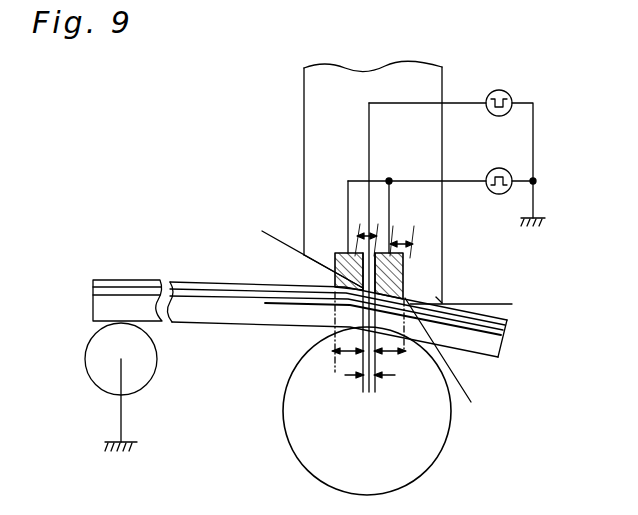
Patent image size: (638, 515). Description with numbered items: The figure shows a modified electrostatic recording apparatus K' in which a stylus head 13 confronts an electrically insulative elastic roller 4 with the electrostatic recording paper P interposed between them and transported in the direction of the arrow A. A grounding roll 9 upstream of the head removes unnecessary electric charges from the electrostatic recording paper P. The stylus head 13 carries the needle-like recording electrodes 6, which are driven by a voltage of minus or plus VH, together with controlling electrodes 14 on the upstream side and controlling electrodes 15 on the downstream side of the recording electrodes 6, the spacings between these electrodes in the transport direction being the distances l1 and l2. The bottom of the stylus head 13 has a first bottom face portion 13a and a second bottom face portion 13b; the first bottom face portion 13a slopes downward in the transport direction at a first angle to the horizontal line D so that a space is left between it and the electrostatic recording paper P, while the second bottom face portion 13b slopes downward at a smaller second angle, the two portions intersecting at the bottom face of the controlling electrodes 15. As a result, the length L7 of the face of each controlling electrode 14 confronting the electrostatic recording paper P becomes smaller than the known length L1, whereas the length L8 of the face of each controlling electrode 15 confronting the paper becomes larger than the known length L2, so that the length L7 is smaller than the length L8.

The stylus head 13 is at (302, 128).
The first bottom face portion 13a is at (315, 262).
The second bottom face portion 13b is at (466, 367).
The controlling electrodes 14 is at (303, 237).
The controlling electrodes 15 is at (400, 271).
The recording electrodes 6 is at (369, 141).
The grounding roll 9 is at (87, 362).
The elastic roller 4 is at (438, 455).
The horizontal line D is at (517, 303).
The transport direction arrow A is at (477, 337).
The electrostatic recording paper P is at (487, 359).
The electrostatic recording apparatus K' is at (561, 36).
The length of upstream controlling electrodes L1 is at (348, 349).
The length of downstream controlling electrodes L2 is at (386, 349).
The face length of upstream controlling electrodes L7 is at (361, 236).
The face length of downstream controlling electrodes L8 is at (398, 244).
The distance between upstream controlling electrodes and recording electrodes l1 is at (365, 378).
The distance between recording electrodes and downstream controlling electrodes l2 is at (372, 378).